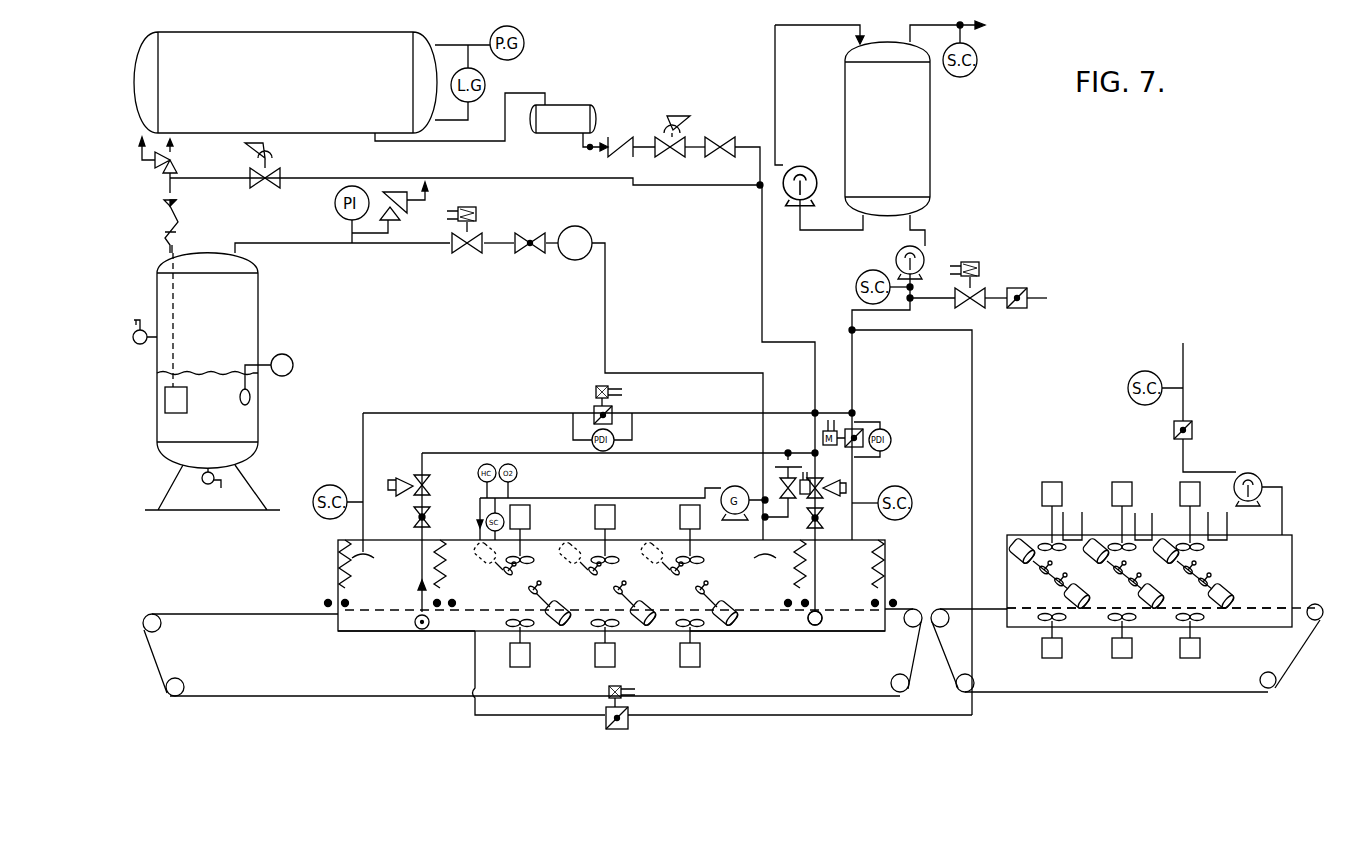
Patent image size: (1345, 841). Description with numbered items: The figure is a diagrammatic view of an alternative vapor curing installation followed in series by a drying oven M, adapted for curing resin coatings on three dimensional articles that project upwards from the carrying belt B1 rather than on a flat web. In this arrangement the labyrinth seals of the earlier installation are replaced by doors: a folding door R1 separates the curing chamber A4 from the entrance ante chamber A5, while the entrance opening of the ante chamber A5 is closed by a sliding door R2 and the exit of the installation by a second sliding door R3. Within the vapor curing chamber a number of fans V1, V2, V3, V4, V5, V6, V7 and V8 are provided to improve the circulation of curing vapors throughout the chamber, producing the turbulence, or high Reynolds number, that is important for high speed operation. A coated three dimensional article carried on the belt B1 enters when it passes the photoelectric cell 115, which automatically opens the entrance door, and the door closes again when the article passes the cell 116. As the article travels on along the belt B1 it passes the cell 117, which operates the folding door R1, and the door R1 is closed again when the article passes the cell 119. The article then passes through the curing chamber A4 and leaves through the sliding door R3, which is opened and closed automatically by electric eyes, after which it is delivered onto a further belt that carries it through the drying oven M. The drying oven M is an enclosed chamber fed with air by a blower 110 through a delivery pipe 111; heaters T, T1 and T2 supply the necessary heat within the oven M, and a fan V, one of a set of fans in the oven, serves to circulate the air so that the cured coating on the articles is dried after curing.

The photoelectric cell 115 is at (328, 606).
The photoelectric cell 116 is at (345, 606).
The photoelectric cell 117 is at (437, 606).
The photoelectric cell 119 is at (452, 600).
The blower 110 is at (1253, 474).
The delivery pipe 111 is at (1283, 487).
The folding door R1 is at (446, 540).
The sliding door R2 is at (339, 552).
The sliding door R3 is at (884, 566).
The fan V1 is at (495, 575).
The fan V2 is at (537, 592).
The fan V3 is at (579, 574).
The fan V4 is at (623, 592).
The fan V5 is at (530, 646).
The fan V6 is at (615, 646).
The fan V7 is at (677, 562).
The fan V8 is at (703, 596).
The curing chamber A4 is at (766, 633).
The ante chamber A5 is at (383, 633).
The carrying belt B1 is at (778, 613).
The heater T is at (1071, 512).
The heater T1 is at (1147, 514).
The heater T2 is at (1216, 514).
The drying oven M is at (1284, 533).
The fan V is at (1149, 573).